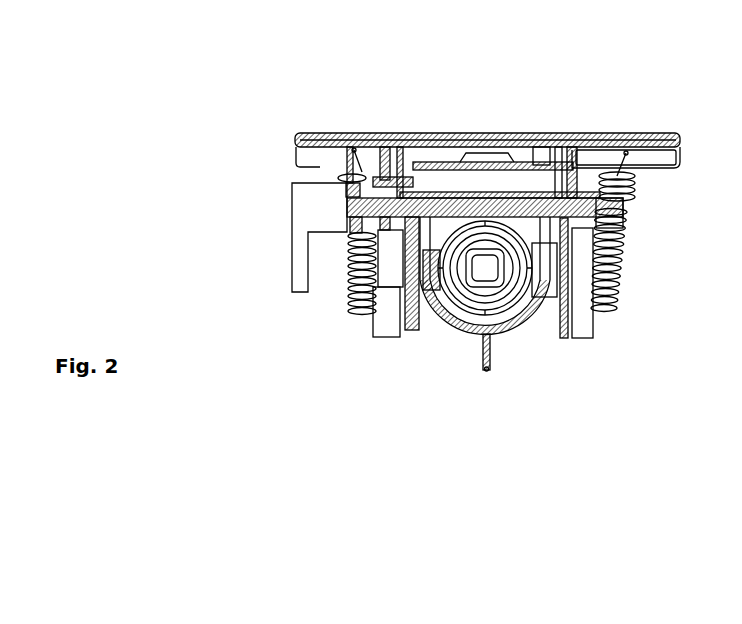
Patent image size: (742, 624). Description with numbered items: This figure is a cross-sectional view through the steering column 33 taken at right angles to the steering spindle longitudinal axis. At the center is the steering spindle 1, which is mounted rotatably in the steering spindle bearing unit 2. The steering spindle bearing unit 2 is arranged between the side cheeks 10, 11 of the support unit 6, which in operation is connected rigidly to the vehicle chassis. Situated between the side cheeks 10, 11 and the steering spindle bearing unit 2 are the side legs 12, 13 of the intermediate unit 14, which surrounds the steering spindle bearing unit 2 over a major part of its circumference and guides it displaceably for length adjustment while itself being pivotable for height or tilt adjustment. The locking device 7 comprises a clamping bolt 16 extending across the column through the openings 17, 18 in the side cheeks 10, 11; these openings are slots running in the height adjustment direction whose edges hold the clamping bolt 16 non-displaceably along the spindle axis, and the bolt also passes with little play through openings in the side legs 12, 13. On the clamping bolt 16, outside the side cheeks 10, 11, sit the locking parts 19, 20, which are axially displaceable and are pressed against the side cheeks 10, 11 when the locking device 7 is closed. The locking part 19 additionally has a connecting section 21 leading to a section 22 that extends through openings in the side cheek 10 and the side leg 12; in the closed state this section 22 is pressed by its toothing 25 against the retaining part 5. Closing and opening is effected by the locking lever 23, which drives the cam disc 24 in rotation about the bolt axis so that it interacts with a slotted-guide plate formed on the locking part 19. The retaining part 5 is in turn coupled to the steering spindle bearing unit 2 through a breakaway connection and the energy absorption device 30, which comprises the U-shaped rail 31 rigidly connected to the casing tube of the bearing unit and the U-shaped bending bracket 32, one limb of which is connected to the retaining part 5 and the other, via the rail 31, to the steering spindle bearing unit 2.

The steering spindle 1 is at (521, 334).
The steering spindle bearing unit 2 is at (613, 273).
The retaining part 5 is at (438, 323).
The support unit 6 is at (457, 130).
The locking device 7 is at (289, 200).
The side cheek 10 is at (384, 146).
The side cheek 11 is at (570, 155).
The side leg 12 is at (352, 221).
The side leg 13 is at (626, 248).
The intermediate unit 14 is at (561, 330).
The clamping bolt 16 is at (473, 208).
The opening 17 is at (374, 165).
The opening 18 is at (637, 178).
The locking part 19 is at (350, 268).
The locking part 20 is at (628, 229).
The connecting section 21 is at (383, 272).
The section 22 is at (372, 318).
The locking lever 23 is at (300, 243).
The cam disc 24 is at (348, 181).
The toothing 25 is at (413, 325).
The energy absorption device 30 is at (433, 320).
The rail 31 is at (465, 332).
The bending bracket 32 is at (489, 372).
The steering column 33 is at (645, 118).